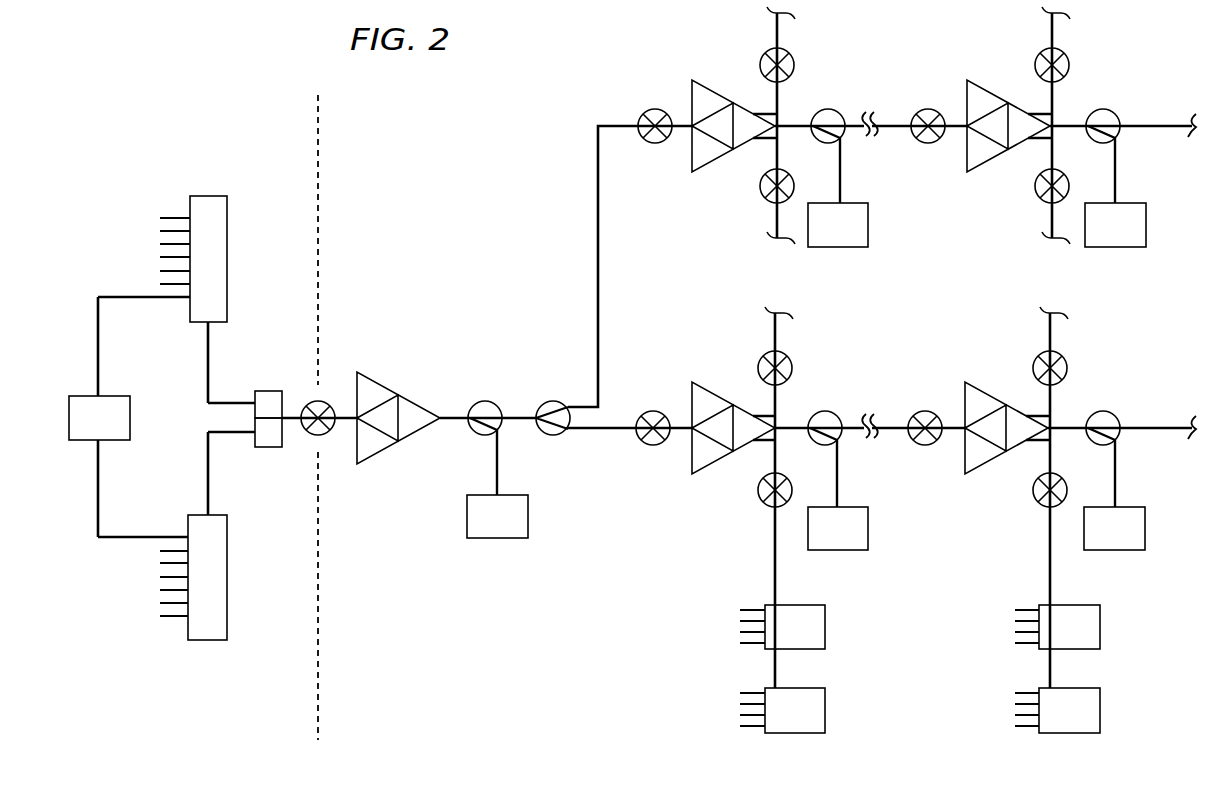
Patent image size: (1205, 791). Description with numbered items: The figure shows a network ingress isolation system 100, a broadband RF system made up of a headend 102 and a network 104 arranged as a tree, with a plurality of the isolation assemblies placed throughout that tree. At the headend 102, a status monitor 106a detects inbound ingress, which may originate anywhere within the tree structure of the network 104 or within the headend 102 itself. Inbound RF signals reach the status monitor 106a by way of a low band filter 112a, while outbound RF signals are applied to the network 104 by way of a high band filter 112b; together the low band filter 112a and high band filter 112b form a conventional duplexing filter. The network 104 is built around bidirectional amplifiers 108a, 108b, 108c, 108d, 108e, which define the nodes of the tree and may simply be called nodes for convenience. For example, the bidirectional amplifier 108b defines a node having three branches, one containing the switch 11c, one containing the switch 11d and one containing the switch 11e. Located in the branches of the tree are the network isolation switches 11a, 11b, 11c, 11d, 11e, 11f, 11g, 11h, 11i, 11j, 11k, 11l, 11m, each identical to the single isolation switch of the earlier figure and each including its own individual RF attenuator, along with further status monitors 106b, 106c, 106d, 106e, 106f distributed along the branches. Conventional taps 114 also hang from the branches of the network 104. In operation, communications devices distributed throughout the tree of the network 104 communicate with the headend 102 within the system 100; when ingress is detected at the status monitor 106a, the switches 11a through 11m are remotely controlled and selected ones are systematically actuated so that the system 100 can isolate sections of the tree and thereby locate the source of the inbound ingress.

The network ingress isolation system 100 is at (413, 81).
The headend 102 is at (287, 141).
The network 104 is at (382, 141).
The status monitor 106a is at (113, 396).
The status monitor 106b is at (517, 495).
The status monitor 106c is at (856, 203).
The status monitor 106d is at (856, 507).
The status monitor 106e is at (1133, 203).
The status monitor 106f is at (1133, 507).
The bidirectional amplifier 108a is at (386, 385).
The bidirectional amplifier 108b is at (722, 95).
The bidirectional amplifier 108c is at (722, 397).
The bidirectional amplifier 108d is at (997, 95).
The bidirectional amplifier 108e is at (995, 397).
The network isolation switch 11a is at (324, 401).
The network isolation switch 11b is at (655, 109).
The network isolation switch 11c is at (787, 57).
The network isolation switch 11d is at (760, 186).
The network isolation switch 11e is at (928, 109).
The network isolation switch 11f is at (1062, 57).
The network isolation switch 11g is at (1035, 186).
The network isolation switch 11h is at (653, 411).
The network isolation switch 11i is at (785, 360).
The network isolation switch 11j is at (758, 490).
The network isolation switch 11k is at (925, 411).
The network isolation switch 11l is at (1060, 360).
The network isolation switch 11m is at (1033, 490).
The low band filter 112a is at (268, 391).
The high band filter 112b is at (268, 447).
The tap 114 is at (227, 241).